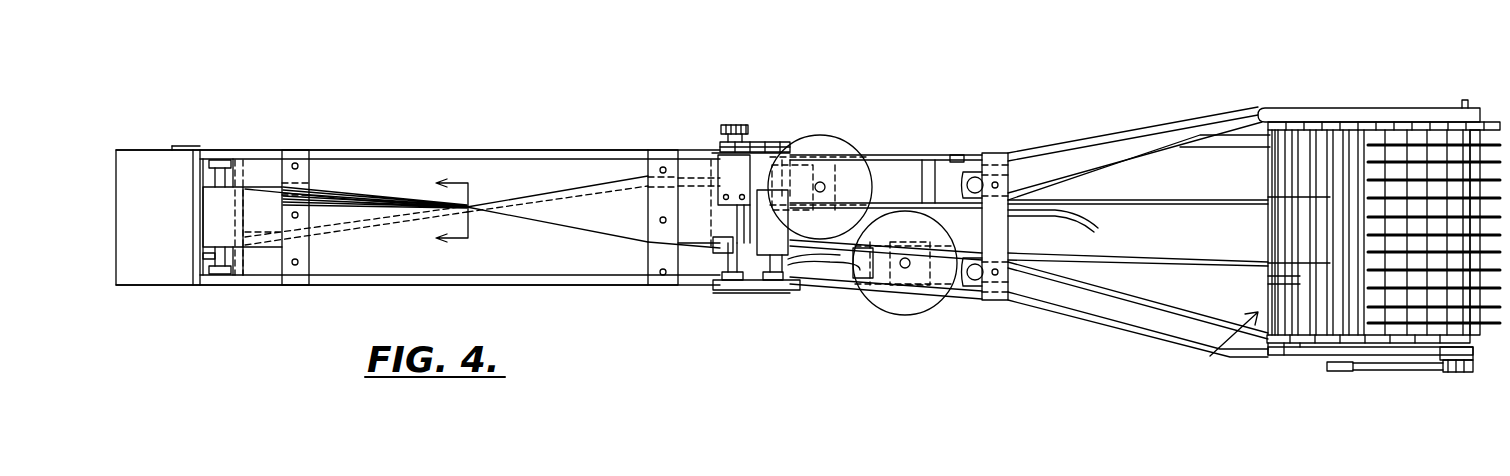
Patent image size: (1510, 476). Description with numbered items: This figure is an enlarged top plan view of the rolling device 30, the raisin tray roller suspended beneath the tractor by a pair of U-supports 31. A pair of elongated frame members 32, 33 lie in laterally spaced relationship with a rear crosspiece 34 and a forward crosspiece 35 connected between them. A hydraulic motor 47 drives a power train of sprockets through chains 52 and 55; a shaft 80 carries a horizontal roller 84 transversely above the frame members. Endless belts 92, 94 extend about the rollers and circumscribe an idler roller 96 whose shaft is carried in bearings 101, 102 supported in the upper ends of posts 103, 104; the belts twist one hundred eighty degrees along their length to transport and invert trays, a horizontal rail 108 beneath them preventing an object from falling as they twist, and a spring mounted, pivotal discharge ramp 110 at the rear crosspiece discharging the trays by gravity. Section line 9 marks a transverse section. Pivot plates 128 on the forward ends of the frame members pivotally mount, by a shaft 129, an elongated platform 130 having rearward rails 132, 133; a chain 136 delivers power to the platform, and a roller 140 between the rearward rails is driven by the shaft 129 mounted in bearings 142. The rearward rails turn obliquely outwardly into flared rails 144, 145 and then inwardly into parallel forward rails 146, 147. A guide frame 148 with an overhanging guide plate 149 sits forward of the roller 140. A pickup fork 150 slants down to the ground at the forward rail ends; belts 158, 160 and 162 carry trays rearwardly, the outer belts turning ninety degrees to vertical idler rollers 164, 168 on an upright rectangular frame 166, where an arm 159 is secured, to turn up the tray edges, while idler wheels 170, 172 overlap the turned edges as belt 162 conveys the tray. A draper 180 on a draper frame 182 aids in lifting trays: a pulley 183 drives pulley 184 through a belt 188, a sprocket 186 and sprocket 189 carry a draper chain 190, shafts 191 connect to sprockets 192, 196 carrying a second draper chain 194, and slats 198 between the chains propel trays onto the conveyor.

The section line 9- 9 is at (461, 210).
The rolling device 30 is at (578, 140).
The U-supports 31 is at (300, 165).
The frame member 32 is at (452, 157).
The frame member 33 is at (470, 287).
The rear crosspiece 34 is at (245, 280).
The forward crosspiece 35 is at (714, 268).
The hydraulic motor 47 is at (728, 170).
The chain 52 is at (722, 141).
The chain 55 is at (736, 125).
The shaft 80 is at (720, 247).
The horizontal roller 84 is at (648, 248).
The endless belt 92 is at (555, 200).
The endless belt 94 is at (562, 240).
The idler roller 96 is at (205, 257).
The bearing 101 is at (223, 162).
The bearing 102 is at (218, 270).
The post 103 is at (216, 150).
The post 104 is at (205, 280).
The horizontal rail 108 is at (366, 241).
The discharge ramp 110 is at (158, 285).
The pivot plates 128 is at (750, 142).
The shaft 129 is at (788, 267).
The elongated platform 130 is at (1065, 123).
The rearward rail 132 is at (880, 163).
The rearward rail 133 is at (838, 290).
The chain 136 is at (766, 142).
The roller 140 is at (792, 260).
The bearings 142 is at (772, 281).
The flared rail 144 is at (1098, 140).
The flared rail 145 is at (1142, 331).
The forward rail 146 is at (1347, 108).
The forward rail 147 is at (1318, 352).
The guide frame 148 is at (860, 276).
The guide plate 149 is at (878, 214).
The pickup fork 150 is at (1415, 140).
The belt 158 is at (1090, 284).
The arm 159 is at (1090, 214).
The belt 160 is at (1197, 145).
The belt 162 is at (1243, 244).
The vertical idler roller 164 is at (995, 300).
The rectangular frame 166 is at (1000, 234).
The vertical idler roller 168 is at (1020, 158).
The idler wheel 170 is at (912, 305).
The idler wheel 172 is at (820, 138).
The draper 180 is at (1217, 341).
The draper frame 182 is at (1285, 357).
The pulley 183 is at (1345, 372).
The pulley 184 is at (1463, 375).
The sprocket 186 is at (1445, 372).
The belt 188 is at (1395, 372).
The sprocket 189 is at (1278, 347).
The draper chain 190 is at (1305, 356).
The shafts 191 is at (1285, 166).
The sprocket 192 is at (1267, 122).
The draper chain 194 is at (1335, 124).
The sprocket 196 is at (1485, 124).
The slats 198 is at (1268, 284).